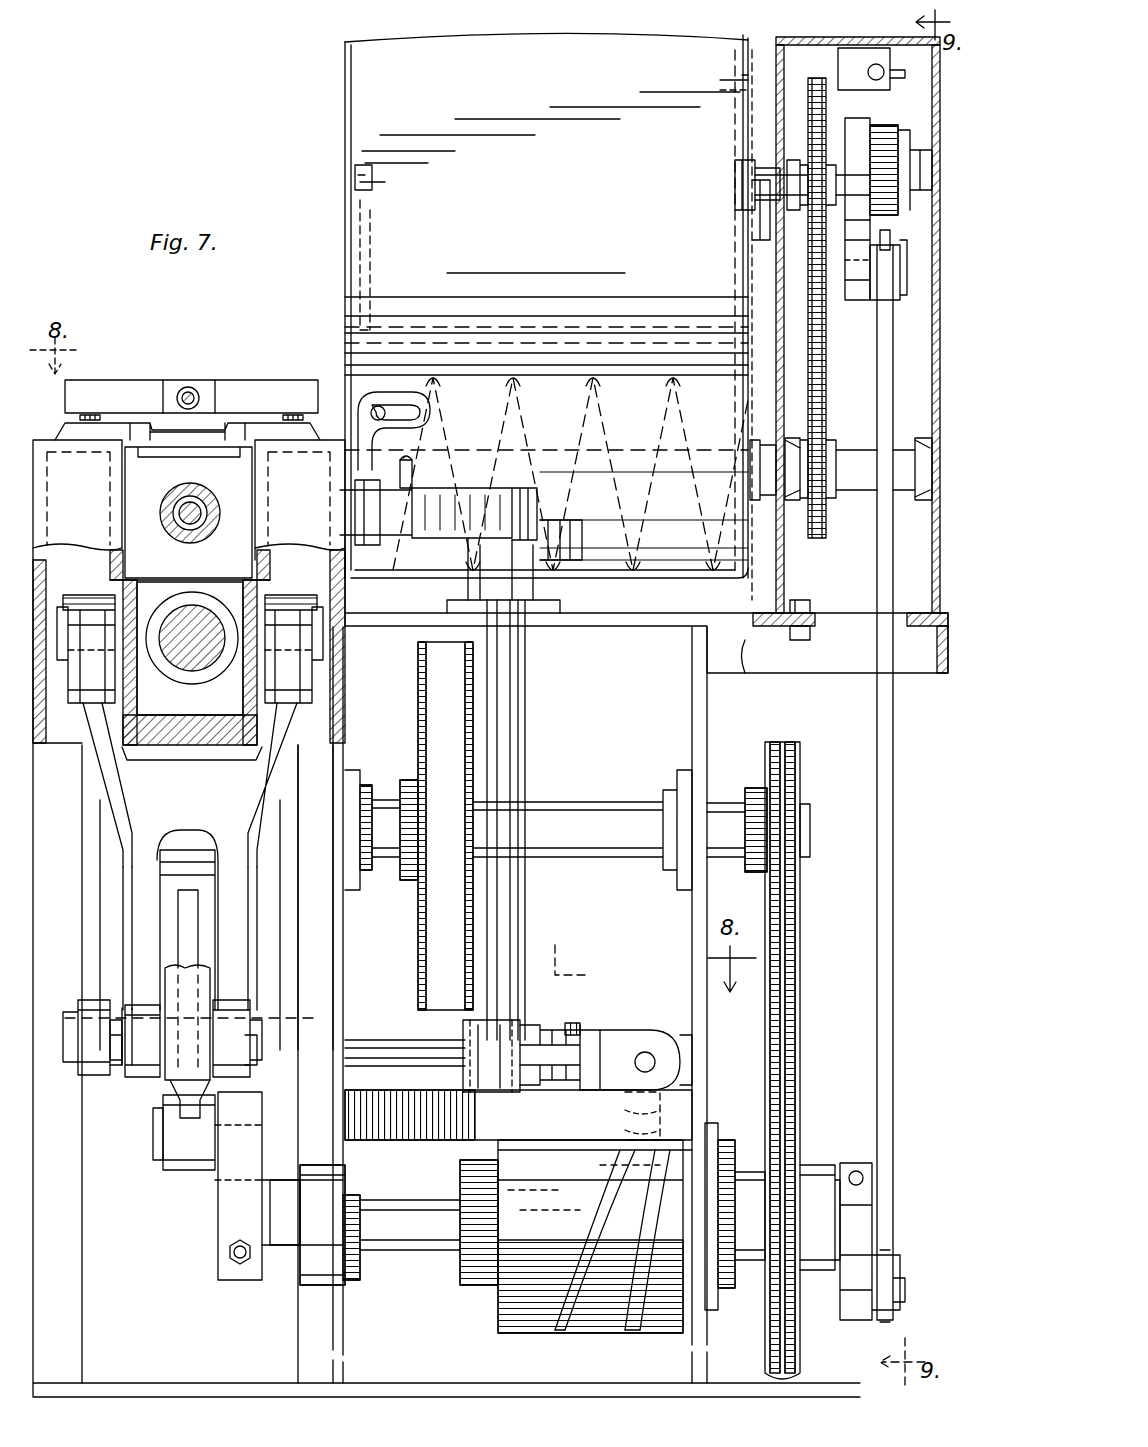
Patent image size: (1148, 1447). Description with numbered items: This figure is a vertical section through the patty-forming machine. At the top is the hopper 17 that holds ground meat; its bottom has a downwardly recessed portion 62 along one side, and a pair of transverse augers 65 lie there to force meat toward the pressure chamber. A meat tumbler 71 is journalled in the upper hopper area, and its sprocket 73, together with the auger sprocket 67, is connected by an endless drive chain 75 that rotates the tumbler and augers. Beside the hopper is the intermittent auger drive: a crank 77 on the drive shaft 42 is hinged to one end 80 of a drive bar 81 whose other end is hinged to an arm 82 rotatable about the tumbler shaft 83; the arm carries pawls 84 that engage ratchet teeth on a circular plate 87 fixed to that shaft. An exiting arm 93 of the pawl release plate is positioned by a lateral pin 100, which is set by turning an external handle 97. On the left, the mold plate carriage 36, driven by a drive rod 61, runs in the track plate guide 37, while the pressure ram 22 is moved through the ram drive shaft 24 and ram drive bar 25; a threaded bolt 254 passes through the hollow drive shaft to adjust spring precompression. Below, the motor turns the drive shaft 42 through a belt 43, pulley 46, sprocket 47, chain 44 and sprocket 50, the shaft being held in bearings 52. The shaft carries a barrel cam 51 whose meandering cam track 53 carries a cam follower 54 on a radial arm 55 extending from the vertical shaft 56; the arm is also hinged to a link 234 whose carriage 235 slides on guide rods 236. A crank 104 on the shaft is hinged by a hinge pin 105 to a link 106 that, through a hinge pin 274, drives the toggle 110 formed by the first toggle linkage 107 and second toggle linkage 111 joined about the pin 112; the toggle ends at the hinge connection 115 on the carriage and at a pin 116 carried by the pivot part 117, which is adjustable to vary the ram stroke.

The hopper 17 is at (575, 84).
The external handle 97 is at (750, 42).
The lateral pin 100 is at (900, 68).
The sprocket 73 is at (812, 134).
The exiting arm 93 is at (905, 98).
The circular plate 87 is at (875, 172).
The tumbler shaft 83 is at (775, 215).
The meat tumbler 71 is at (390, 330).
The arm 82 is at (860, 300).
The pawl 84 is at (900, 258).
The endless drive chain 75 is at (818, 360).
The auger 65 is at (588, 395).
The mold plate carriage 36 is at (108, 395).
The drive rod 61 is at (192, 390).
The track plate guide 37 is at (135, 445).
The ram drive shaft 24 is at (172, 508).
The pressure ram 22 is at (232, 472).
The threaded bolt 254 is at (196, 540).
The downwardly recessed portion 62 is at (612, 552).
The sprocket 67 is at (822, 518).
The drive bar 81 is at (885, 592).
The ram drive bar 25 is at (195, 655).
The pin 112 is at (335, 652).
The pulley 46 is at (420, 728).
The sprocket 47 is at (800, 782).
The toggle 110 is at (113, 834).
The first toggle linkage 107 is at (226, 860).
The hinge pin 274 is at (118, 885).
The belt 43 is at (440, 912).
The vertical shaft 56 is at (510, 895).
The second toggle linkage 111 is at (310, 968).
The hinge connection 115 is at (68, 1024).
The pivot part 117 is at (195, 1016).
The guide rod 236 is at (372, 1048).
The link 234 is at (597, 1052).
The carriage 235 is at (632, 1040).
The chain 44 is at (788, 1013).
The pin 116 is at (118, 1060).
The link 106 is at (182, 1108).
The hinge pin 105 is at (158, 1142).
The radial arm 55 is at (558, 1068).
The cam follower 54 is at (622, 1118).
The bearing 52 is at (712, 1128).
The crank 77 is at (856, 1163).
The end of drive bar 80 is at (892, 1222).
The crank 104 is at (228, 1198).
The cam track 53 is at (625, 1185).
The barrel cam 51 is at (538, 1240).
The drive shaft 42 is at (398, 1248).
The sprocket 50 is at (765, 1300).